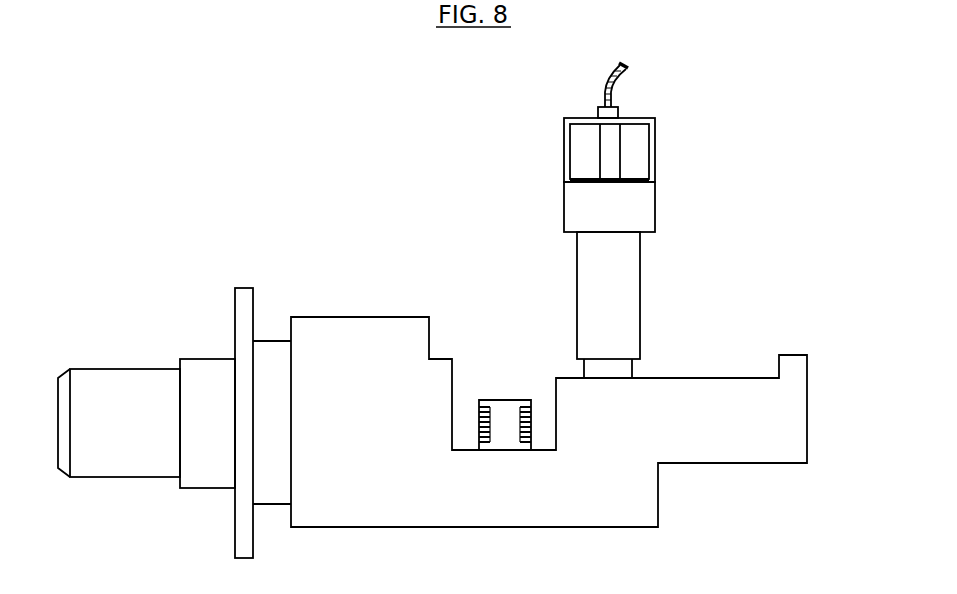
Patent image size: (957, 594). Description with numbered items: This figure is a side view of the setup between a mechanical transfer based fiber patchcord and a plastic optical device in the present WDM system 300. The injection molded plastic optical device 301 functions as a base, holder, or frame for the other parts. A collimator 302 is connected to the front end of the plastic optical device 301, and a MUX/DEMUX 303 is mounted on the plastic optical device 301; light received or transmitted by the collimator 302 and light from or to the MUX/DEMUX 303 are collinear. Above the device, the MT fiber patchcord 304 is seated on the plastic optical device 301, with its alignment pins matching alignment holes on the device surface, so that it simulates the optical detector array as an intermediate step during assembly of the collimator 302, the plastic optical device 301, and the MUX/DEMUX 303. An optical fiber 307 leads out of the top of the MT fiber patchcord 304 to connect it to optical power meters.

The WDM system 300 is at (150, 110).
The plastic optical device 301 is at (383, 337).
The collimator 302 is at (148, 380).
The MUX/DEMUX 303 is at (515, 408).
The MT fiber patchcord 304 is at (630, 319).
The optical fiber 307 is at (612, 92).